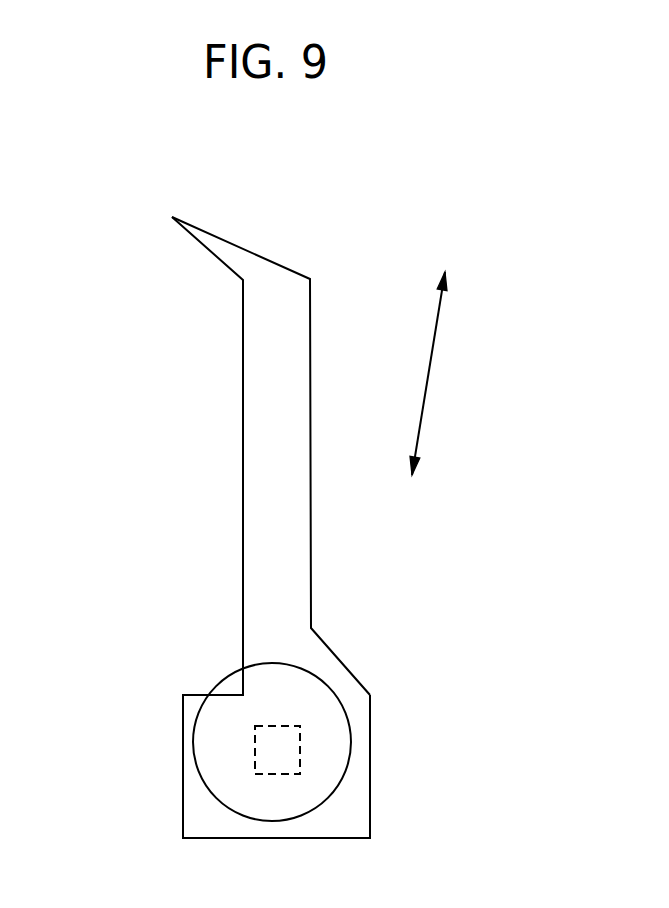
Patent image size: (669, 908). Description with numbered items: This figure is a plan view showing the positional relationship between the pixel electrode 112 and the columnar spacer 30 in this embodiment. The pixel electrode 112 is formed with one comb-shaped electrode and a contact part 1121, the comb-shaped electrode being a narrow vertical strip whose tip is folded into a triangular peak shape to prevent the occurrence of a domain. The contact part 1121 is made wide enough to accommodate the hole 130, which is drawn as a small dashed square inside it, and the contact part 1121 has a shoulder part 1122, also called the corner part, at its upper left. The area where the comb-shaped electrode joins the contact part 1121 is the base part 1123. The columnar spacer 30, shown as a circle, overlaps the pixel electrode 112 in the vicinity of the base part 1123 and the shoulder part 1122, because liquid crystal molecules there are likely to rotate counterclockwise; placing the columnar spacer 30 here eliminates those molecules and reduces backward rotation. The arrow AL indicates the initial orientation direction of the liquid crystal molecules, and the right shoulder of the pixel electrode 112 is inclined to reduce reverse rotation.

The pixel electrode 112 is at (243, 445).
The contact part 1121 is at (353, 788).
The shoulder part 1122 is at (183, 695).
The base part 1123 is at (243, 695).
The columnar spacer 30 is at (349, 732).
The hole 130 is at (255, 750).
The arrow indicating initial orientation direction AL is at (428, 387).